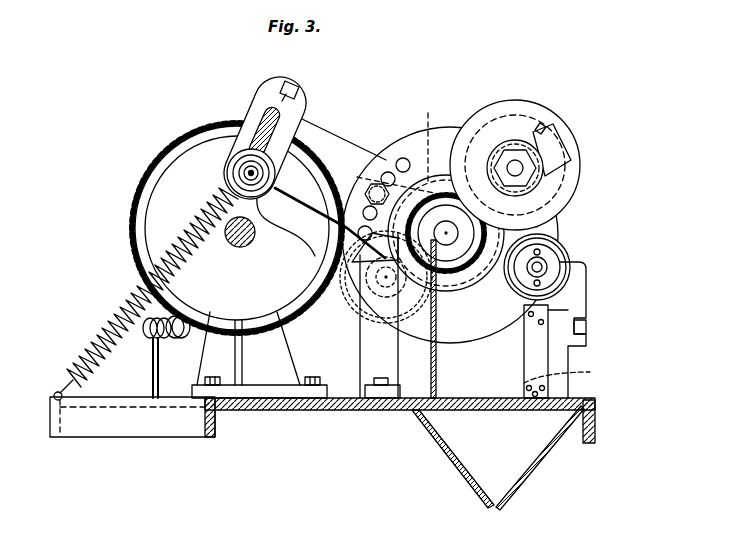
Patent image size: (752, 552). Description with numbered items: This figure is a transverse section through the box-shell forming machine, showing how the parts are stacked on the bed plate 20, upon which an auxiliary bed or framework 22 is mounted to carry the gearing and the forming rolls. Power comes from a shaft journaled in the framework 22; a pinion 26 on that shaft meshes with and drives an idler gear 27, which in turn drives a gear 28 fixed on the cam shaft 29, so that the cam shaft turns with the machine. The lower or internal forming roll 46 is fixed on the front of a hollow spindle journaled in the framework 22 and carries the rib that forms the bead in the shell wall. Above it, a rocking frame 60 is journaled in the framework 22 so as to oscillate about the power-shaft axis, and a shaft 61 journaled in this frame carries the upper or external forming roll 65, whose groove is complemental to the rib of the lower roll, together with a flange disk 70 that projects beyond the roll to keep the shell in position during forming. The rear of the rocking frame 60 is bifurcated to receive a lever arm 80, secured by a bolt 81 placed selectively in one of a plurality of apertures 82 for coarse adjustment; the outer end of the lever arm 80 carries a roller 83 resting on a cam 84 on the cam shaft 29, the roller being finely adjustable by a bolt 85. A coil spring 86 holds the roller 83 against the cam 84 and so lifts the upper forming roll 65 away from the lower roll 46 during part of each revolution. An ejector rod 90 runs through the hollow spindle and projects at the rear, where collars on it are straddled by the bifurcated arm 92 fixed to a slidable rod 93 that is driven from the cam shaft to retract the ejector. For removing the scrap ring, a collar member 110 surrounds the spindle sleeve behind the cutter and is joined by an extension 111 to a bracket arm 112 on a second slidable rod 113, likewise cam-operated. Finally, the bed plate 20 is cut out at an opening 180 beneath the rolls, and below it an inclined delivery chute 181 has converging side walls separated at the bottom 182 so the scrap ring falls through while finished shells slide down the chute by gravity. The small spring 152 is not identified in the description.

The bed plate 20 is at (361, 410).
The auxiliary bed or framework 22 is at (401, 334).
The pinion 26 is at (442, 132).
The idler gear 27 is at (350, 300).
The gear 28 is at (146, 188).
The cam shaft 29 is at (252, 247).
The lower or internal forming roll 46 is at (522, 275).
The rocking frame 60 is at (422, 138).
The shaft 61 is at (515, 165).
The upper or external forming roll 65 is at (560, 176).
The flange disk 70 is at (487, 121).
The lever arm 80 is at (346, 153).
The bolt 81 is at (369, 189).
The apertures 82 is at (394, 160).
The roller 83 is at (228, 170).
The cam 84 is at (283, 247).
The bolt 85 is at (262, 124).
The coil spring 86 is at (130, 307).
The ejector rod 90 is at (546, 264).
The arm 92 is at (588, 268).
The slidable rod 93 is at (588, 336).
The collar member 110 is at (553, 243).
The extension 111 is at (525, 311).
The bracket arm 112 is at (524, 350).
The slidable rod 113 is at (574, 372).
The small spring 152 is at (165, 340).
The opening 180 is at (453, 374).
The inclined delivery chute 181 is at (541, 468).
The bottom separation of chute 182 is at (505, 505).